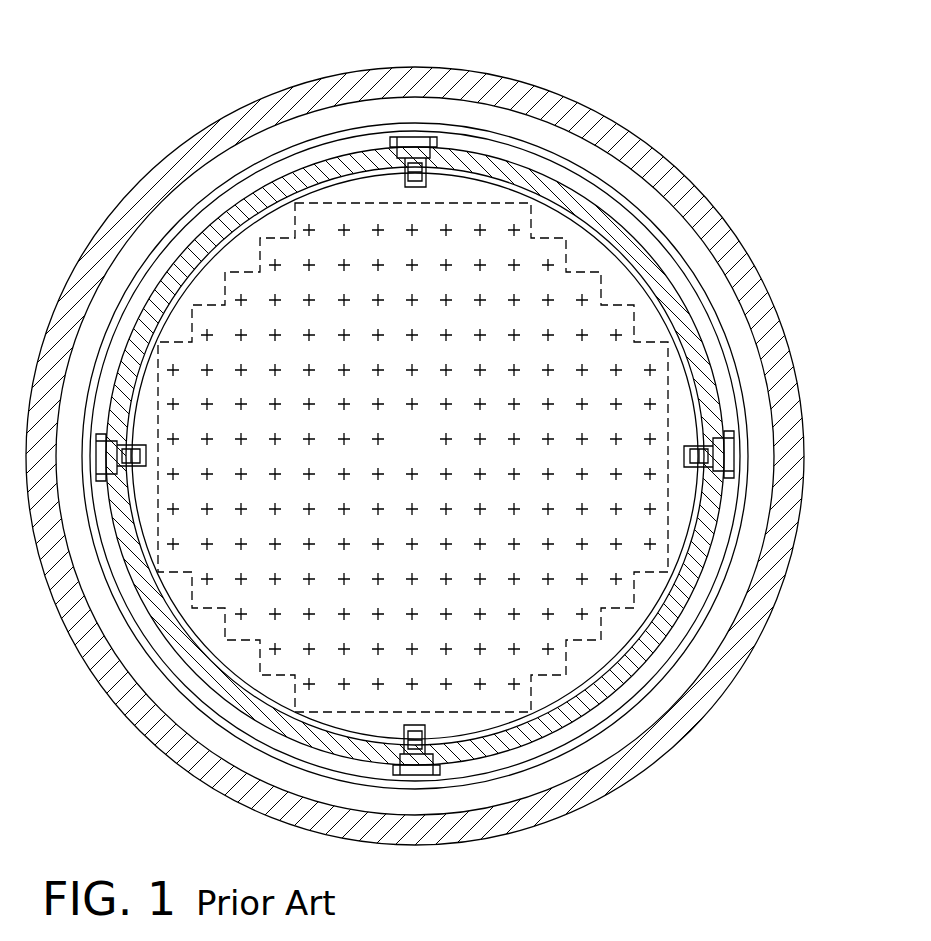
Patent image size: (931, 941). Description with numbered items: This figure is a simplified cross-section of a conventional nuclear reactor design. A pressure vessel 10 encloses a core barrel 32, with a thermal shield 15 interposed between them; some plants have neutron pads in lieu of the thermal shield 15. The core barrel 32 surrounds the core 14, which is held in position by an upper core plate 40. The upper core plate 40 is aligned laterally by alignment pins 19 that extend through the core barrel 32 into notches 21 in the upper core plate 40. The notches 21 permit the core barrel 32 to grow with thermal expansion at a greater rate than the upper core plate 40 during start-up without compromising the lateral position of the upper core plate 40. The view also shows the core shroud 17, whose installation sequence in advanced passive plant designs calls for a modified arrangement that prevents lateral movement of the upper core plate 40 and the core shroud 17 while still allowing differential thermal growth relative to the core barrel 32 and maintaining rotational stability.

The pressure vessel 10 is at (197, 137).
The thermal shield 15 is at (158, 241).
The alignment pins 19 is at (432, 153).
The notches 21 is at (458, 179).
The core shroud 17 is at (583, 258).
The upper core plate 40 is at (628, 354).
The core 14 is at (427, 450).
The core barrel 32 is at (175, 652).